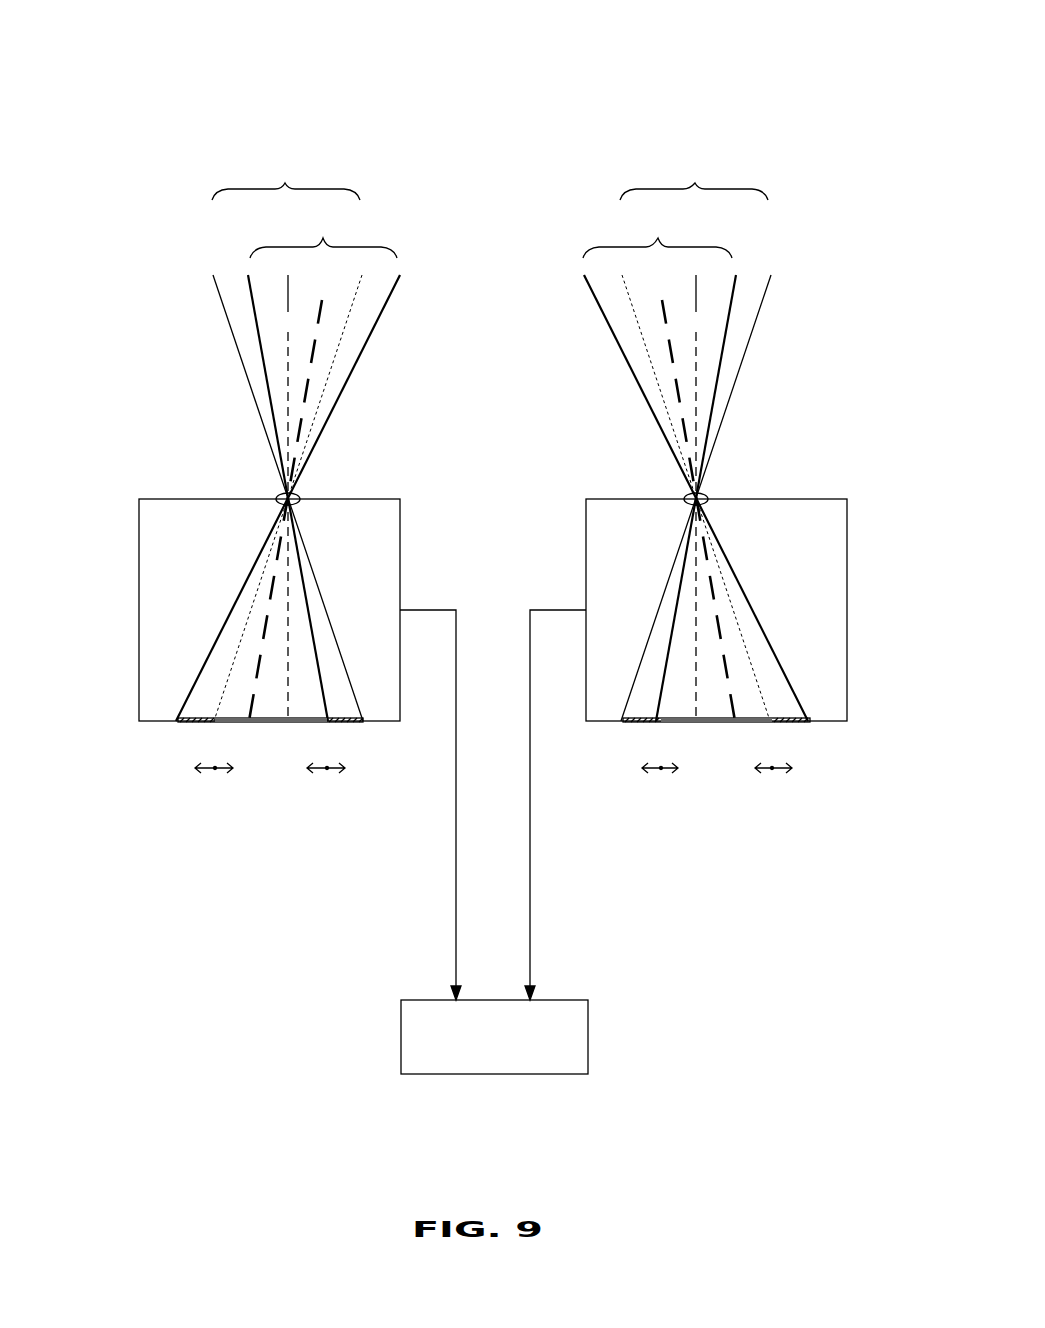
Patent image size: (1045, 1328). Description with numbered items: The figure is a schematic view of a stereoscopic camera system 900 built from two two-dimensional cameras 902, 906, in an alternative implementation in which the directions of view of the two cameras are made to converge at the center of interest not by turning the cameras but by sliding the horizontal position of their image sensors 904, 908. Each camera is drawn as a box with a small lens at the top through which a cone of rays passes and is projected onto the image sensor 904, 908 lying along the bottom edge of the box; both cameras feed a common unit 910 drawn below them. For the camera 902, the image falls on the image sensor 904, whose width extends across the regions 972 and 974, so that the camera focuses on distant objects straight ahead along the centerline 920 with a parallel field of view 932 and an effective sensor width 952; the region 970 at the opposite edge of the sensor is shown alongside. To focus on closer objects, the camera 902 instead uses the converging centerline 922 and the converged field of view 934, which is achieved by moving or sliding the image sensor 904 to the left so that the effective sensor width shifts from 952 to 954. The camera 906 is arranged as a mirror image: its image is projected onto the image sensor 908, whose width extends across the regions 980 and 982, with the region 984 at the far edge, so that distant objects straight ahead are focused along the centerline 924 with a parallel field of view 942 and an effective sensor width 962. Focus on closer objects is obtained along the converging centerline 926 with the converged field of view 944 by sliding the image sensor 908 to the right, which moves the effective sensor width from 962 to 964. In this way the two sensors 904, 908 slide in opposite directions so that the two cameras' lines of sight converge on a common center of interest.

The stereoscopic camera system 900 is at (512, 48).
The camera 902 is at (269, 607).
The image sensor 904 is at (217, 682).
The camera 906 is at (716, 607).
The image sensor 908 is at (768, 682).
The processor 910 is at (494, 1037).
The centerline 920 is at (287, 498).
The converging centerline 922 is at (296, 497).
The centerline 924 is at (697, 498).
The converging centerline 926 is at (688, 497).
The parallel field of view 932 is at (288, 439).
The converged field of view 934 is at (305, 467).
The parallel field of view 942 is at (696, 439).
The converged field of view 944 is at (676, 467).
The effective sensor width 952 is at (363, 810).
The effective sensor width 954 is at (328, 857).
The effective sensor width 962 is at (772, 810).
The effective sensor width 964 is at (810, 857).
The first edge detector region 970 is at (195, 734).
The sensor width portion 972 is at (327, 738).
The sensor width portion 974 is at (346, 734).
The sensor width portion 980 is at (641, 734).
The sensor width portion 982 is at (772, 738).
The second opposite edge detector region 984 is at (791, 734).